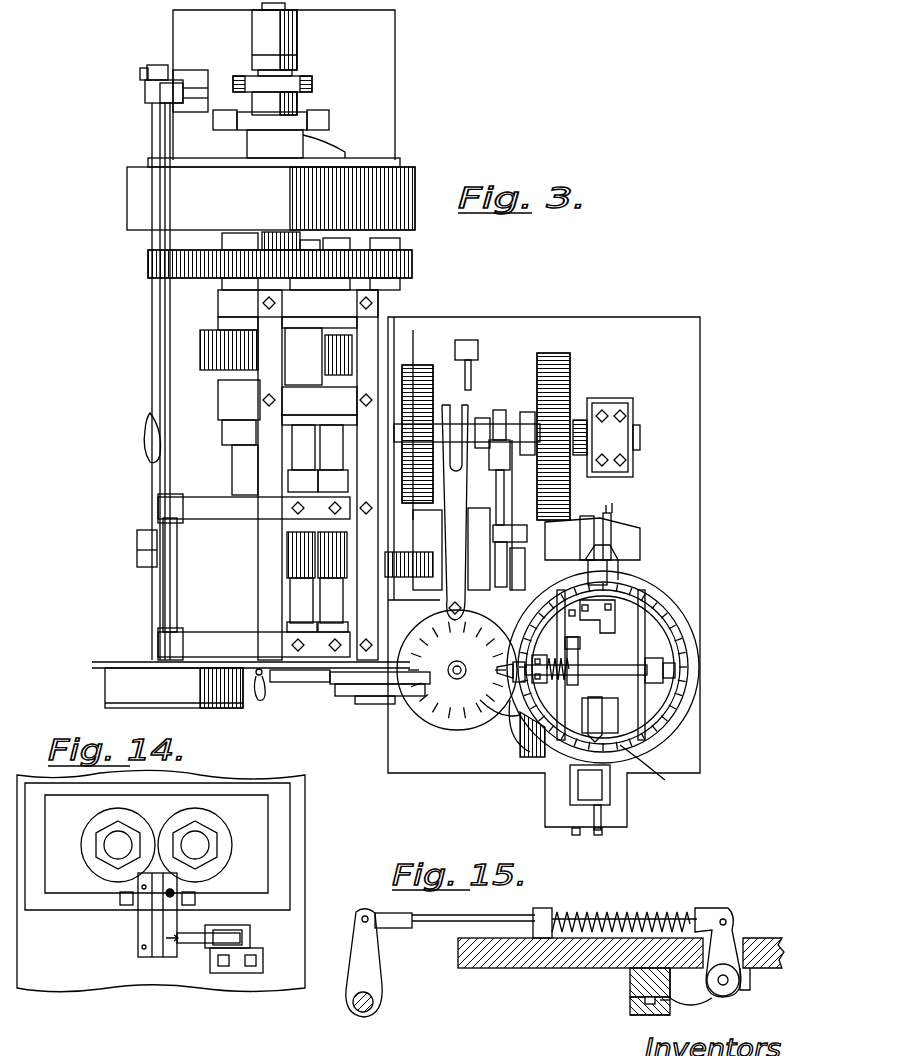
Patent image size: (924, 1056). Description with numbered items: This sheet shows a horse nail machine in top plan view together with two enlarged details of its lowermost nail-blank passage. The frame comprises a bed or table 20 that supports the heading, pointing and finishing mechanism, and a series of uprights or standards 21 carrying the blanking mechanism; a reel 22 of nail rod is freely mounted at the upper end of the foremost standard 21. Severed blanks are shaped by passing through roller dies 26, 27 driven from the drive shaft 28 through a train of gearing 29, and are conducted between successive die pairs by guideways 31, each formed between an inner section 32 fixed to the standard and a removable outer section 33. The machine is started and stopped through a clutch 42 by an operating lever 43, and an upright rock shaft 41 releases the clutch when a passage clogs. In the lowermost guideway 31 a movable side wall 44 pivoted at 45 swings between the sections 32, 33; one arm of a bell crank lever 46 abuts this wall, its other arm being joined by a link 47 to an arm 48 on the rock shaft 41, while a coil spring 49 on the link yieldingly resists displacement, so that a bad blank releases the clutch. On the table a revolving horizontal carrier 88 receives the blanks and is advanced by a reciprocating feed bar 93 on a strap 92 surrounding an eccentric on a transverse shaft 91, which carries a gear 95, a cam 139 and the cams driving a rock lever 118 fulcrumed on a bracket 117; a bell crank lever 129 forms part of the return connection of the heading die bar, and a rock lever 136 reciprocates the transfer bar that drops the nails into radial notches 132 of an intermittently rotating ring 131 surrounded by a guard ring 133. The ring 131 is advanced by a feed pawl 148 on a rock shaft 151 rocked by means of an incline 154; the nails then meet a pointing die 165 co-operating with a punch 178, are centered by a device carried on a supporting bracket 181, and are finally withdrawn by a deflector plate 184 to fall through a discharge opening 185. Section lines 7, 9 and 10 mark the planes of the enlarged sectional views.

In FIG. 3, the drive shaft 28 is at (300, 8).
In FIG. 3, the clutch 42 is at (198, 158).
In FIG. 3, the train of gearing 29 is at (148, 266).
In FIG. 3, the operating lever 43 is at (145, 440).
In FIG. 3, the uprights or standards 21 is at (217, 510).
In FIG. 14, the uprights or standards 21 is at (161, 880).
In FIG. 15, the uprights or standards 21 is at (510, 962).
In FIG. 3, the reel 22 is at (251, 685).
In FIG. 3, the section line 7— 7 is at (345, 692).
In FIG. 3, the gear 95 is at (415, 372).
In FIG. 3, the bell crank lever 129 is at (482, 352).
In FIG. 3, the strap 92 is at (500, 410).
In FIG. 3, the cam 139 is at (530, 420).
In FIG. 3, the bed or table 20 is at (590, 436).
In FIG. 3, the transverse shaft 91 is at (640, 437).
In FIG. 3, the section line 9— 9 is at (535, 412).
In FIG. 3, the section line 10— 10 is at (600, 840).
In FIG. 3, the rock lever 118 is at (455, 508).
In FIG. 3, the bracket 117 is at (433, 545).
In FIG. 3, the rock lever 136 is at (520, 572).
In FIG. 3, the supporting bracket 181 is at (640, 578).
In FIG. 3, the guard ring 133 is at (680, 626).
In FIG. 3, the radial notches 132 is at (670, 700).
In FIG. 3, the ring carrier 131 is at (664, 720).
In FIG. 3, the feed pawl 148 is at (675, 670).
In FIG. 3, the incline 154 is at (572, 646).
In FIG. 3, the horizontal rock shaft 151 is at (598, 709).
In FIG. 3, the revolving horizontal carrier 88 is at (457, 670).
In FIG. 3, the reciprocating feed bar 93 is at (500, 672).
In FIG. 3, the deflector plate 184 is at (495, 716).
In FIG. 3, the discharge opening 185 is at (515, 730).
In FIG. 3, the pointing die 165 is at (663, 769).
In FIG. 3, the punch 178 is at (601, 810).
In FIG. 14, the roller dies 26 is at (100, 820).
In FIG. 14, the roller dies 27 is at (222, 826).
In FIG. 14, the pivot 45 is at (176, 896).
In FIG. 14, the guideway 31 is at (153, 922).
In FIG. 15, the guideway 31 is at (635, 1018).
In FIG. 14, the movable side wall 44 is at (168, 950).
In FIG. 15, the movable side wall 44 is at (662, 1016).
In FIG. 14, the bell crank lever 46 is at (198, 940).
In FIG. 15, the bell crank lever 46 is at (713, 1002).
In FIG. 15, the link 47 is at (463, 915).
In FIG. 15, the coil spring 49 is at (624, 909).
In FIG. 15, the arm 48 is at (370, 968).
In FIG. 15, the upright rock shaft 41 is at (358, 1014).
In FIG. 15, the inner guideway section 32 is at (630, 985).
In FIG. 15, the outer guideway section 33 is at (630, 1004).